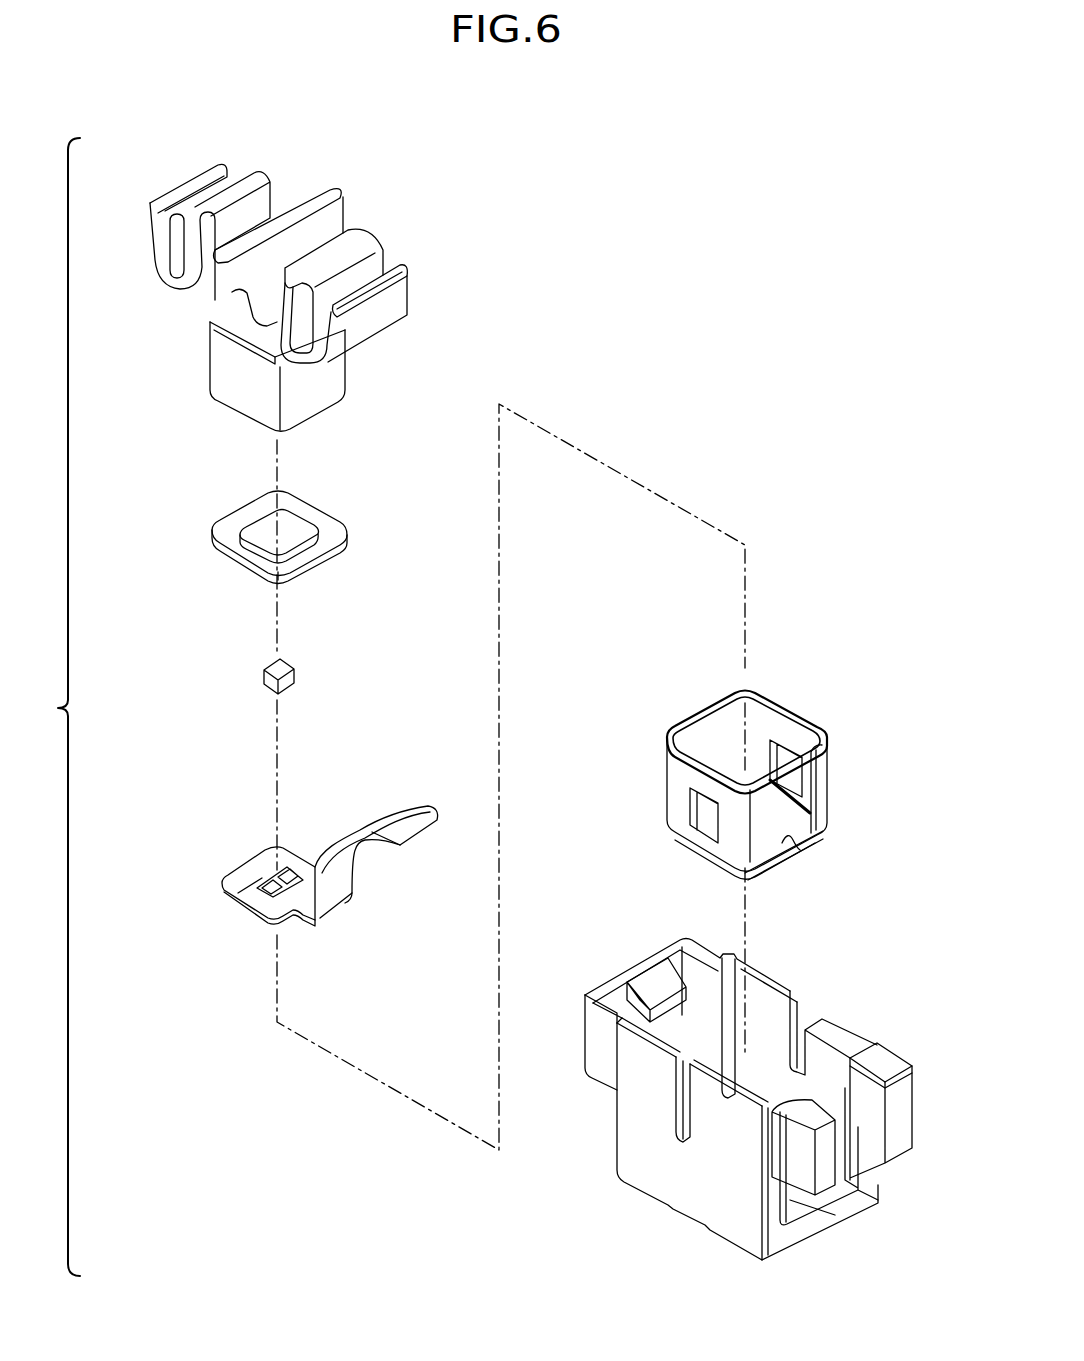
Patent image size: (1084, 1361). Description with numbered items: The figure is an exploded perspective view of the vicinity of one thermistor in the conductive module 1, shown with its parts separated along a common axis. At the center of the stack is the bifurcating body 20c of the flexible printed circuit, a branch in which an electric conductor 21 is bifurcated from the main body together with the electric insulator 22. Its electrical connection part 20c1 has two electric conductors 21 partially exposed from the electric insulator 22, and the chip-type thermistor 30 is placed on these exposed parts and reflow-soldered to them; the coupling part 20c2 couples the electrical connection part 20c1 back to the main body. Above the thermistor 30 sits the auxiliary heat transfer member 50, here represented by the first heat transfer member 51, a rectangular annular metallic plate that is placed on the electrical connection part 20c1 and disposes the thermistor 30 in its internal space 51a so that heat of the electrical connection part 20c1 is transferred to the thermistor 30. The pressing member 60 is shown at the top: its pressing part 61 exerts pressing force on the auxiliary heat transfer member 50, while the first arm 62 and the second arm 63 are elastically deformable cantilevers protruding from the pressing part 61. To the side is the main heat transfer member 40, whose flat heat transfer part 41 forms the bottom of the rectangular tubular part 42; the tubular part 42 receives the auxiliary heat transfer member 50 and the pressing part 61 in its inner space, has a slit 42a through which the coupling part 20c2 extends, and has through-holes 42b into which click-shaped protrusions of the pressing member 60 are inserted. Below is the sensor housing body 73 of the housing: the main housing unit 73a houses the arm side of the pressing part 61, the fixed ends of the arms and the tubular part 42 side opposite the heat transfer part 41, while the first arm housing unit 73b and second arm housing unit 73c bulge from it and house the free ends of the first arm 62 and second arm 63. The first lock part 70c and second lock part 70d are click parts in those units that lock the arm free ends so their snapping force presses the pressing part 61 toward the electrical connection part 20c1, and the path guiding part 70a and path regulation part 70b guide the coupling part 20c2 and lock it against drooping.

The conductive module 1 is at (60, 707).
The bifurcating body 20c is at (280, 831).
The electrical connection part 20c1 is at (253, 880).
The coupling part 20c2 is at (403, 823).
The electric conductor 21 is at (292, 875).
The electric insulator 22 is at (238, 880).
The thermistor 30 is at (305, 667).
The main heat transfer member 40 is at (742, 764).
The heat transfer part 41 is at (793, 847).
The tubular part 42 is at (823, 758).
The slit 42a is at (807, 788).
The through-hole 42b is at (707, 812).
The auxiliary heat transfer member 50 is at (317, 512).
The first heat transfer member 51 is at (233, 525).
The internal space 51a is at (297, 527).
The pressing member 60 is at (318, 266).
The pressing part 61 is at (322, 387).
The first arm 62 is at (188, 188).
The second arm 63 is at (383, 307).
The path guiding part 70a is at (794, 1199).
The path regulation part 70b is at (797, 1228).
The first lock part 70c is at (646, 979).
The second lock part 70d is at (841, 1085).
The sensor housing body 73 is at (745, 1110).
The main housing unit 73a is at (633, 1141).
The first arm housing unit 73b is at (590, 982).
The second arm housing unit 73c is at (901, 1075).